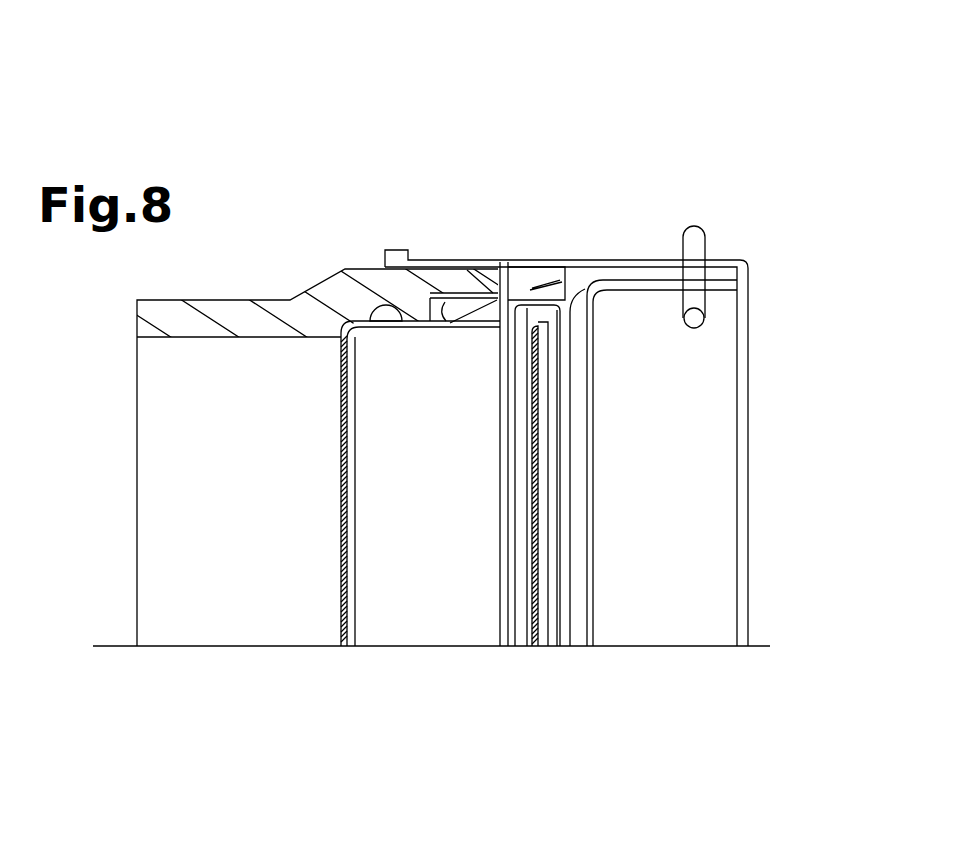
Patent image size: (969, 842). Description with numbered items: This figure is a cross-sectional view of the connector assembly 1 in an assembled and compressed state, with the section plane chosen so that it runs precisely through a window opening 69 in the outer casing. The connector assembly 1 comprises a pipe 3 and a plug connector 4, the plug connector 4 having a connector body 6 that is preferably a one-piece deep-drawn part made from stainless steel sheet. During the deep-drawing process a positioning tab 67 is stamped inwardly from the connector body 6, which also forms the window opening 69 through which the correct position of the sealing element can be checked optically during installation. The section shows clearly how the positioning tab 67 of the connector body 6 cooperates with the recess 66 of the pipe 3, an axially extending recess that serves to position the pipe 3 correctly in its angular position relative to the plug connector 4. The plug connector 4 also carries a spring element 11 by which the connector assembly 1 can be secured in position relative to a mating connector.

The connector assembly 1 is at (674, 114).
The pipe 3 is at (222, 318).
The plug connector 4 is at (736, 237).
The connector body 6 is at (698, 474).
The spring element 11 is at (705, 320).
The recess 66 is at (540, 263).
The positioning tab 67 is at (510, 263).
The window opening 69 is at (488, 260).